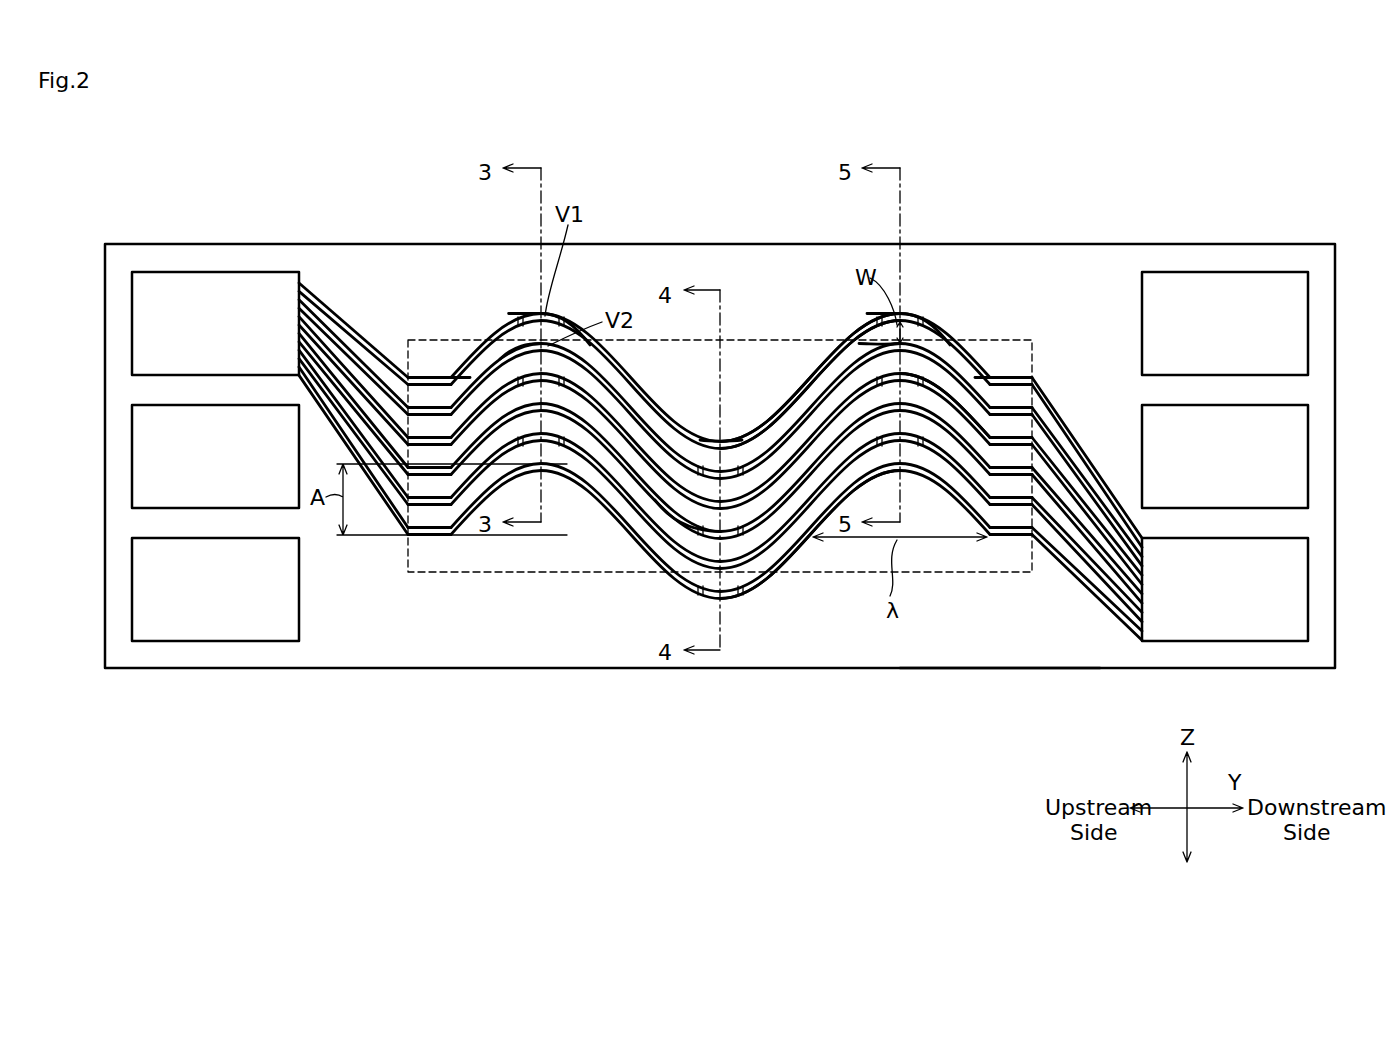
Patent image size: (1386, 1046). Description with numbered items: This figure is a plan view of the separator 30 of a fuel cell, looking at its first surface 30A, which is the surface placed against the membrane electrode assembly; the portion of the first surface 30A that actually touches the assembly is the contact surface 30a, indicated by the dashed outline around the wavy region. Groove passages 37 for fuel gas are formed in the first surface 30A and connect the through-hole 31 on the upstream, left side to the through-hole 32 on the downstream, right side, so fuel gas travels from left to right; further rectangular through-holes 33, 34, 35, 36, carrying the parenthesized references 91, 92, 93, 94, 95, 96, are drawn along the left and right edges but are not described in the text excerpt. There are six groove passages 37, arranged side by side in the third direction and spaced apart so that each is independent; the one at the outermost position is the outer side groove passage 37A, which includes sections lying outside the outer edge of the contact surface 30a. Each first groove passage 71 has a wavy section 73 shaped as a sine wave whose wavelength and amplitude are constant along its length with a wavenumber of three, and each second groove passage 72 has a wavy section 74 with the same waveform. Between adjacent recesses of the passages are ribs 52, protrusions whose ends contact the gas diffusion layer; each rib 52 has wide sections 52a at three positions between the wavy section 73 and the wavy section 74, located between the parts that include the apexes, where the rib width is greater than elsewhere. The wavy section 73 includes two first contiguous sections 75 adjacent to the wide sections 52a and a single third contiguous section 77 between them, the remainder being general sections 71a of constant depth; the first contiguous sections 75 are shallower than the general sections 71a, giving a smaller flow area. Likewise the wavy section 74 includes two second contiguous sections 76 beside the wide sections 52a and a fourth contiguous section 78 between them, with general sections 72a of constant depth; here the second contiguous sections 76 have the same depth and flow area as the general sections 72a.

The separator 30 is at (1200, 238).
The first surface 30A is at (975, 650).
The contact surface 30a is at (948, 552).
The through-hole 31 is at (214, 279).
The through-hole 32 is at (1251, 637).
The terminal pad 33 is at (1225, 491).
The terminal pad 34 is at (215, 495).
The terminal pad 35 is at (1248, 281).
The terminal pad 36 is at (214, 637).
The terminal 91 is at (133, 297).
The terminal 92 is at (1305, 615).
The terminal 93 is at (1305, 493).
The terminal 94 is at (133, 490).
The terminal 95 is at (1307, 297).
The terminal 96 is at (133, 627).
The groove passages 37 is at (402, 334).
The outer side groove passage 37A is at (822, 372).
The ribs 52 is at (642, 521).
The wide sections 52a is at (562, 318).
The first groove passage 71 is at (450, 378).
The general sections 71a is at (450, 376).
The second groove passage 72 is at (1012, 478).
The general sections 72a is at (455, 398).
The wavy section 73 is at (947, 458).
The wavy section 74 is at (792, 447).
The first contiguous sections 75 is at (541, 313).
The second contiguous sections 76 is at (525, 347).
The third contiguous section 77 is at (721, 440).
The fourth contiguous section 78 is at (682, 500).